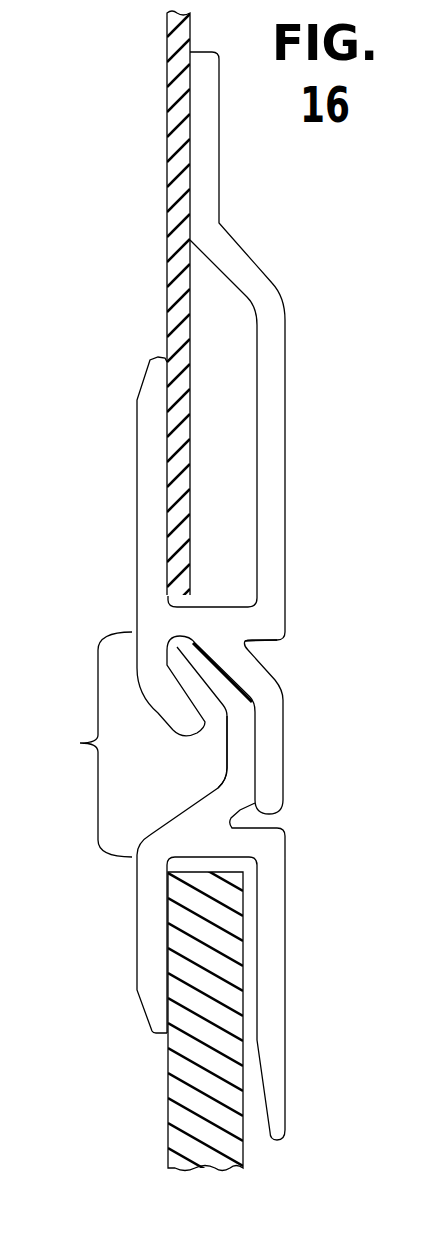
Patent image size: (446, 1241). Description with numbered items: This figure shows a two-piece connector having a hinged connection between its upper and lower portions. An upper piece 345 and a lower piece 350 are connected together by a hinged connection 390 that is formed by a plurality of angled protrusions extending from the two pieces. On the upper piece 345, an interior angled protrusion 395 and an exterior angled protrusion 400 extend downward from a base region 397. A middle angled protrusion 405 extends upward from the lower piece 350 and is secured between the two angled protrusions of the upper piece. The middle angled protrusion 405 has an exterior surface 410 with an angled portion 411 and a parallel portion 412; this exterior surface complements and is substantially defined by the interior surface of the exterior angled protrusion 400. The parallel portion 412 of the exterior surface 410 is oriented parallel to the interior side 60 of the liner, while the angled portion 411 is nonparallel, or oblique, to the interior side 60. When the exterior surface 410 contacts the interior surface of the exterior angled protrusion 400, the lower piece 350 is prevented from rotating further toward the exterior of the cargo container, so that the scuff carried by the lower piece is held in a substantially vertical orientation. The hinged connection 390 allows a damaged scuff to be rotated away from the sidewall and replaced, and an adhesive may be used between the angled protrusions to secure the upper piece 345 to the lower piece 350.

The interior side of the liner 60 is at (167, 231).
The upper piece 345 is at (268, 447).
The lower piece 350 is at (270, 932).
The hinged connection 390 is at (258, 695).
The interior angled protrusion 395 is at (187, 713).
The base region 397 is at (80, 743).
The exterior angled protrusion 400 is at (268, 757).
The middle angled protrusion 405 is at (240, 760).
The exterior surface 410 is at (252, 698).
The angled portion 411 is at (245, 653).
The parallel portion 412 is at (259, 783).